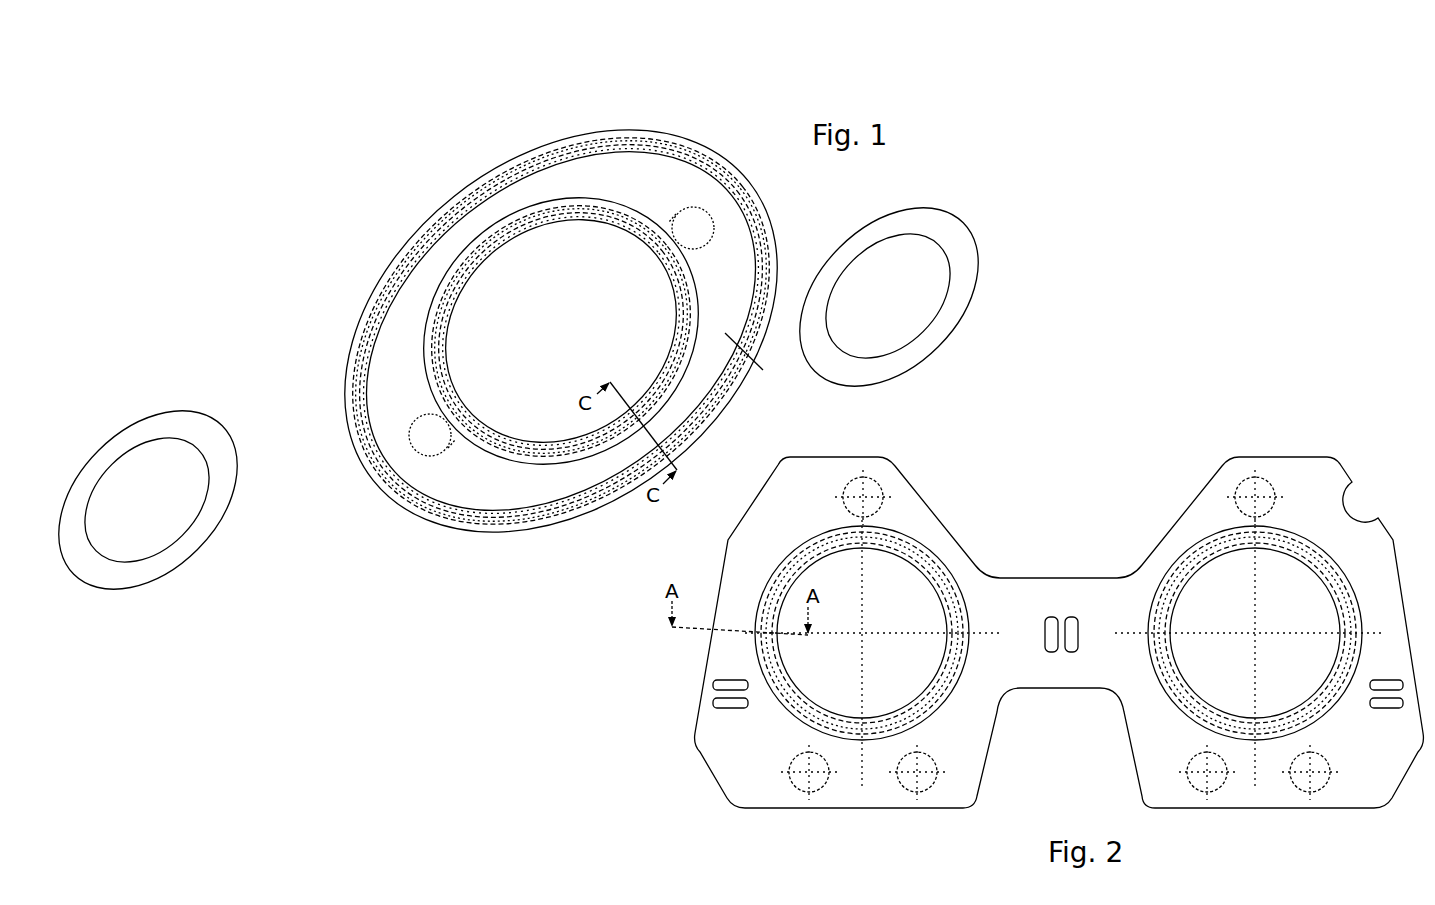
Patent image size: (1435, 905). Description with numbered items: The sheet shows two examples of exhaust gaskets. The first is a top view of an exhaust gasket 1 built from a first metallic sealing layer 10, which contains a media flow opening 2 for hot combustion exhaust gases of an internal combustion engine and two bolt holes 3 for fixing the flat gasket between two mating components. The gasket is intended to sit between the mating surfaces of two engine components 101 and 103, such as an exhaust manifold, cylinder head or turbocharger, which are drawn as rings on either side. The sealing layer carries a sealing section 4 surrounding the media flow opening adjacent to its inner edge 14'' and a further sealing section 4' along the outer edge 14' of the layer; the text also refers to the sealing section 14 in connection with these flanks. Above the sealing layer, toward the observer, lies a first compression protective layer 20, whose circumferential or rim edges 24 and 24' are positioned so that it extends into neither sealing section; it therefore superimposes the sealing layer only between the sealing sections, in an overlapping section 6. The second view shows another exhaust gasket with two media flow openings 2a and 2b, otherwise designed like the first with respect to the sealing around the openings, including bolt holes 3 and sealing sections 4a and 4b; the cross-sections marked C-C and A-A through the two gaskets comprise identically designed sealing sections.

In FIG. 1, the exhaust gasket 1 is at (754, 367).
In FIG. 2, the exhaust gasket 1 is at (912, 508).
In FIG. 1, the media flow opening 2 is at (561, 347).
In FIG. 2, the media flow opening 2a is at (876, 649).
In FIG. 2, the media flow opening 2b is at (1270, 649).
In FIG. 1, the bolt hole 3 is at (699, 239).
In FIG. 2, the bolt hole 3 is at (869, 507).
In FIG. 1, the sealing section 4 is at (561, 331).
In FIG. 1, the sealing section 4' is at (561, 331).
In FIG. 2, the sealing section 4a is at (797, 705).
In FIG. 2, the sealing section 4b is at (1203, 553).
In FIG. 1, the overlapping section 6 is at (463, 242).
In FIG. 1, the metallic sealing layer 10 is at (490, 440).
In FIG. 1, the bead flank 14 is at (561, 366).
In FIG. 2, the bead flank 14 is at (1058, 633).
In FIG. 1, the outer edge 14' is at (561, 331).
In FIG. 1, the inner edge 14'' is at (561, 330).
In FIG. 1, the compression protective layer 20 is at (675, 178).
In FIG. 2, the compression protective layer 20 is at (977, 582).
In FIG. 1, the rim edge 24 is at (561, 331).
In FIG. 2, the rim edge 24 is at (1058, 607).
In FIG. 1, the rim edge 24' is at (561, 331).
In FIG. 1, the engine component 101 is at (165, 410).
In FIG. 1, the engine component 103 is at (978, 265).